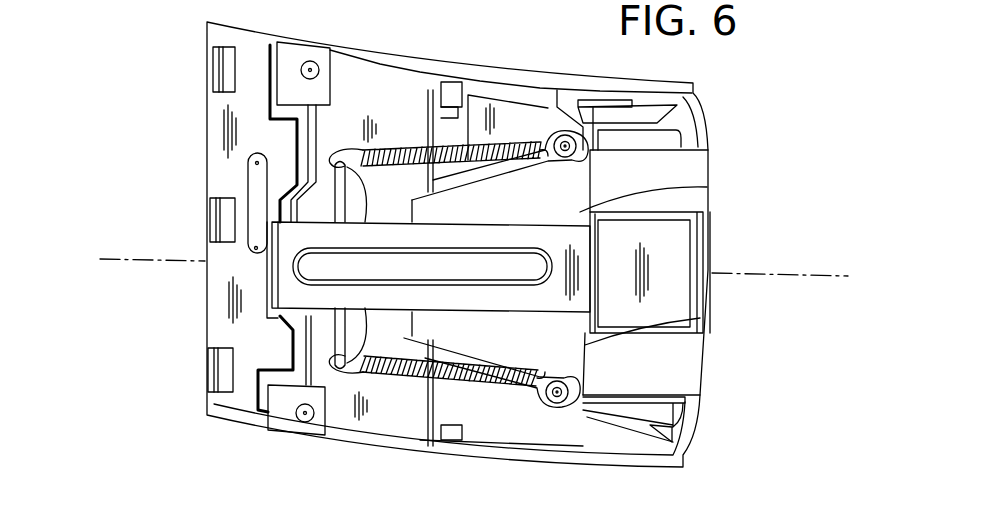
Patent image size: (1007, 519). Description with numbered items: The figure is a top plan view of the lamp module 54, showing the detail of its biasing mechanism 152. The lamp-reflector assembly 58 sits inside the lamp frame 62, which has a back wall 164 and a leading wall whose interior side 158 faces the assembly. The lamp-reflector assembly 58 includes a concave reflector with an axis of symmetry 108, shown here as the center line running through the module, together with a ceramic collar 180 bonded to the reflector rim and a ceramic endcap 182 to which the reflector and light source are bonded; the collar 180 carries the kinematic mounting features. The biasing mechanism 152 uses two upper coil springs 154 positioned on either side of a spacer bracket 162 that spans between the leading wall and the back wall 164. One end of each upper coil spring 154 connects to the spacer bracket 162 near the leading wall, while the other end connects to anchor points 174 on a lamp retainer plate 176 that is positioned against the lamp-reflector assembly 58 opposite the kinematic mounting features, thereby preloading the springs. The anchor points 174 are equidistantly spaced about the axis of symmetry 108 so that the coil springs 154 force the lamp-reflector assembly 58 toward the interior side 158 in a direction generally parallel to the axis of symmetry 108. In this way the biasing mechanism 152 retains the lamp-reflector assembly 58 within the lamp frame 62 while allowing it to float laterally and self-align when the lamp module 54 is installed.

The lamp module 54 is at (778, 67).
The lamp frame 62 is at (513, 72).
The back wall 164 is at (300, 134).
The anchor points 174 is at (345, 147).
The lamp retainer plate 176 is at (325, 199).
The endcap 182 is at (313, 217).
The upper coil springs 154 is at (412, 145).
The lamp-reflector assembly 58 is at (485, 175).
The spacer bracket 162 is at (707, 187).
The interior side 158 is at (695, 247).
The collar 180 is at (667, 287).
The axis of symmetry 108 is at (827, 268).
The biasing mechanism 152 is at (508, 437).